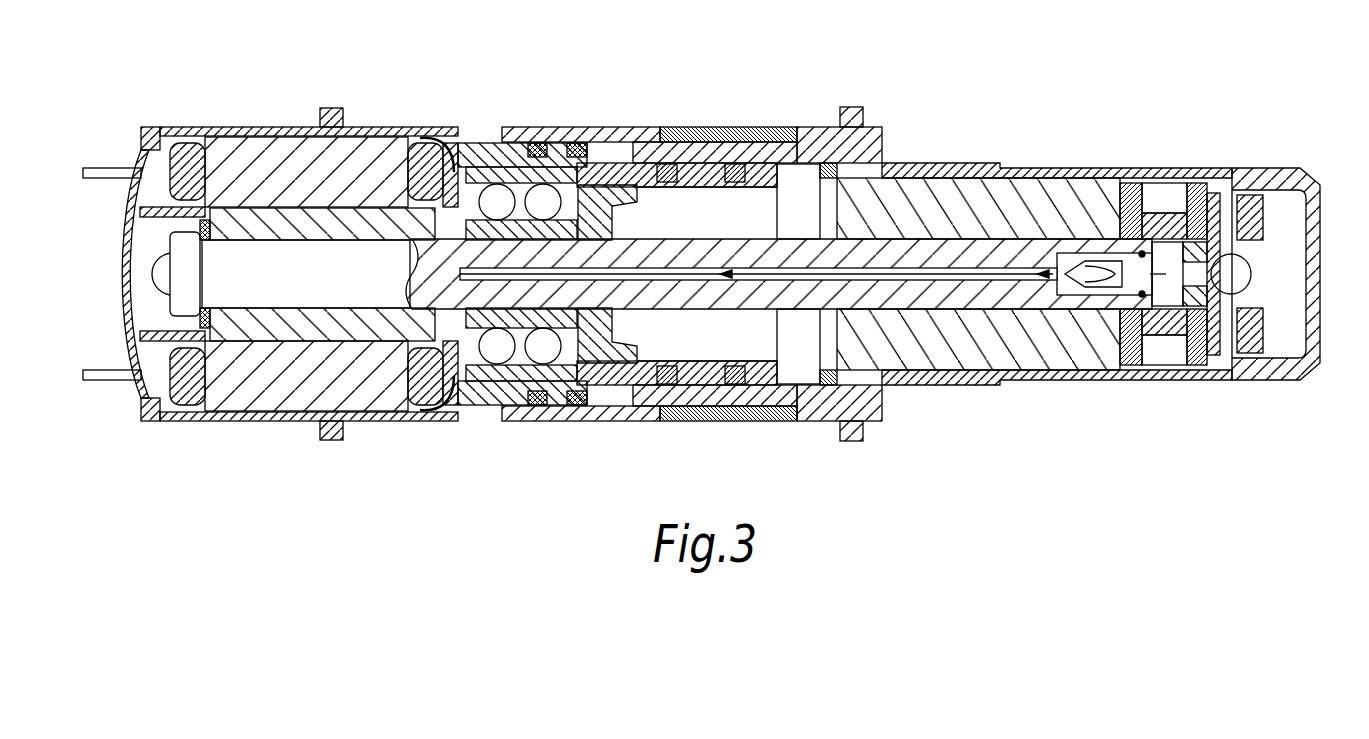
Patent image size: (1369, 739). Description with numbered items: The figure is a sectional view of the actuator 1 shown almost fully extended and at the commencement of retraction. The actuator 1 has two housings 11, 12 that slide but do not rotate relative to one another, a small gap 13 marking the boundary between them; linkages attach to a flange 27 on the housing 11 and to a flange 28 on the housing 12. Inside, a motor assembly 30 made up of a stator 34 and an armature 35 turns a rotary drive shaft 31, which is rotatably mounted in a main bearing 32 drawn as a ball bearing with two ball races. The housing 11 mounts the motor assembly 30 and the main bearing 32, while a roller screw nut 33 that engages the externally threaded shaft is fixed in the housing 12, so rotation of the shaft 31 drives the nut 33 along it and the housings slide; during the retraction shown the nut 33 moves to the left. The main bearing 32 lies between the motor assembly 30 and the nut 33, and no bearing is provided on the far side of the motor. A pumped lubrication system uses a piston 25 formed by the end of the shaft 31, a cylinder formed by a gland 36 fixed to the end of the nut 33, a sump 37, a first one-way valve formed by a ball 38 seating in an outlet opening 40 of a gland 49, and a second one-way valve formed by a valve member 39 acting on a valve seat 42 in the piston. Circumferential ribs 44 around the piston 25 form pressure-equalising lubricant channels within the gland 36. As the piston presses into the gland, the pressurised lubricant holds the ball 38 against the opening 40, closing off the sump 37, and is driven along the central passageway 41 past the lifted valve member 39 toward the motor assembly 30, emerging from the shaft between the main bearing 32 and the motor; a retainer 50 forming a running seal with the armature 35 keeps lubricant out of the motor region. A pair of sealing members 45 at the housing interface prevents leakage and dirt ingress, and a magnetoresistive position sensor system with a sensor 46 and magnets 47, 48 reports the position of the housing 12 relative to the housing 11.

The actuator 1 is at (918, 58).
The housing 11 is at (480, 405).
The housing 12 is at (800, 405).
The gap 13 is at (478, 130).
The piston 25 is at (1128, 243).
The flange 27 is at (333, 110).
The flange 28 is at (845, 118).
The motor assembly 30 is at (363, 421).
The rotary drive shaft 31 is at (913, 295).
The main bearing 32 is at (515, 135).
The roller screw nut 33 is at (1010, 190).
The stator 34 is at (265, 400).
The armature 35 is at (258, 325).
The gland 36 is at (1200, 183).
The sump 37 is at (1287, 233).
The ball 38 is at (1233, 275).
The valve member 39 is at (1107, 292).
The outlet opening 40 is at (1267, 330).
The passageway 41 is at (945, 268).
The valve seat 42 is at (1130, 292).
The circumferential ribs 44 is at (1140, 232).
The sealing members 45 is at (572, 405).
The sensor 46 is at (778, 130).
The magnet 47 is at (650, 163).
The magnet 48 is at (733, 163).
The gland 49 is at (1253, 247).
The retainer 50 is at (416, 137).